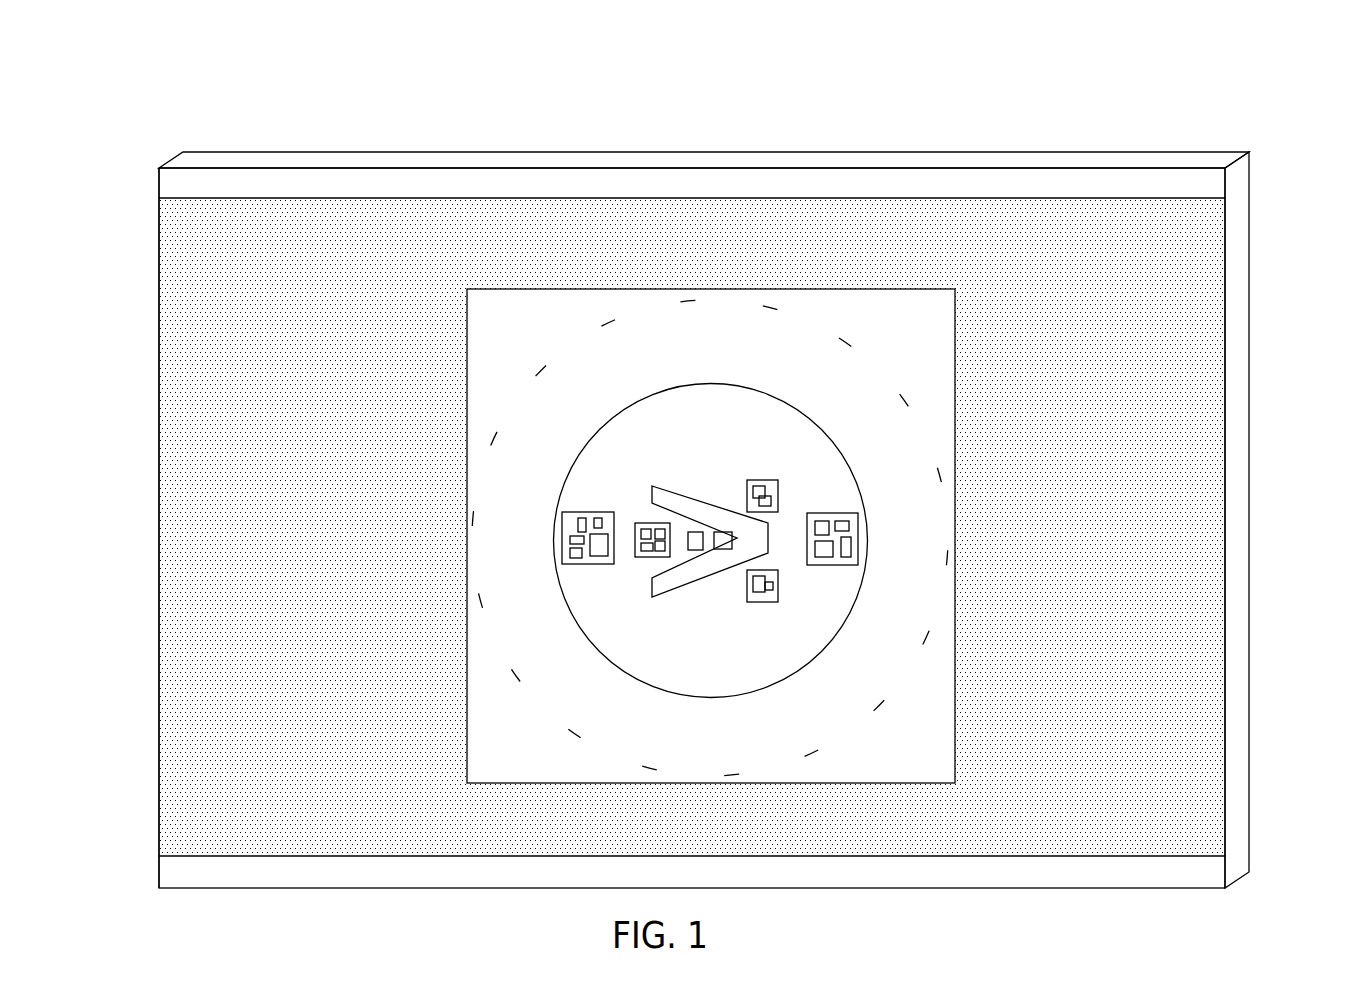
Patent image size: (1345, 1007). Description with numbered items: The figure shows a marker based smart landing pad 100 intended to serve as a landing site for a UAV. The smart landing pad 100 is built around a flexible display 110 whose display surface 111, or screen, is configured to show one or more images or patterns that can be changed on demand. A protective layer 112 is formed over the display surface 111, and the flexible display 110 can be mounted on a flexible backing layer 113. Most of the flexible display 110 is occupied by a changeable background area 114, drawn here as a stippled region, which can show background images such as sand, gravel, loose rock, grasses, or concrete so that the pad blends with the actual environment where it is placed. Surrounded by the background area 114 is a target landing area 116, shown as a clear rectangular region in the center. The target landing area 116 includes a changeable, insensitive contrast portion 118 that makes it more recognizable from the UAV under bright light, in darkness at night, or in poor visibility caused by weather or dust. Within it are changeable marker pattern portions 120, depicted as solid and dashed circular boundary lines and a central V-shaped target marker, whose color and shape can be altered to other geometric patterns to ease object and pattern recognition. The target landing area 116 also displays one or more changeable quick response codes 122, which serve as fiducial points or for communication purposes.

The smart landing pad 100 is at (468, 85).
The flexible display 110 is at (1234, 296).
The display surface 111 is at (1177, 247).
The protective layer 112 is at (159, 383).
The flexible backing layer 113 is at (1083, 152).
The changeable background area 114 is at (215, 578).
The target landing area 116 is at (932, 649).
The contrast portion 118 is at (930, 493).
The marker pattern portions 120 is at (698, 303).
The quick response (QR) codes 122 is at (598, 564).